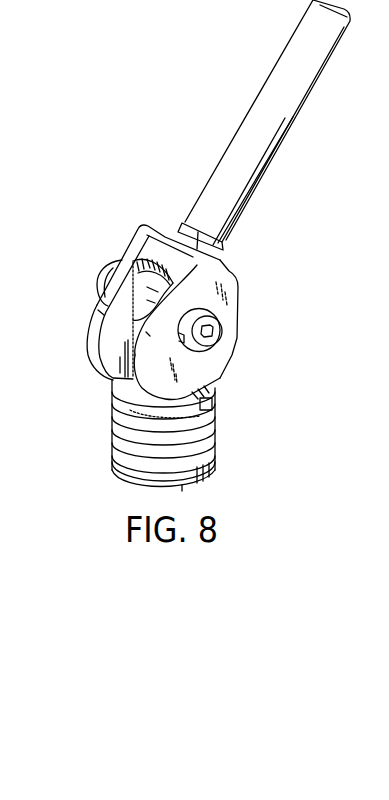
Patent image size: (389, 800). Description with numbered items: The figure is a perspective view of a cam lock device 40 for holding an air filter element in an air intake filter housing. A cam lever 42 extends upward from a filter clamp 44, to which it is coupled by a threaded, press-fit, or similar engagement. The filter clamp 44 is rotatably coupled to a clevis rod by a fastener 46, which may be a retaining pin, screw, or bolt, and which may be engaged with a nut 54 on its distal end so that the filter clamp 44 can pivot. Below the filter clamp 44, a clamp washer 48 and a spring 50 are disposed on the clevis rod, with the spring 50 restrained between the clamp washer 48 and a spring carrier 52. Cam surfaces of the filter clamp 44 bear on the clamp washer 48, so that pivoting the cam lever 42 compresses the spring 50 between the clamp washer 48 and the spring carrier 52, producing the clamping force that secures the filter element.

The cam lock device 40 is at (207, 112).
The cam lever 42 is at (299, 118).
The filter clamp 44 is at (133, 232).
The fastener 46 is at (223, 338).
The clamp washer 48 is at (110, 385).
The spring 50 is at (215, 423).
The spring carrier 52 is at (217, 462).
The nut 54 is at (97, 280).